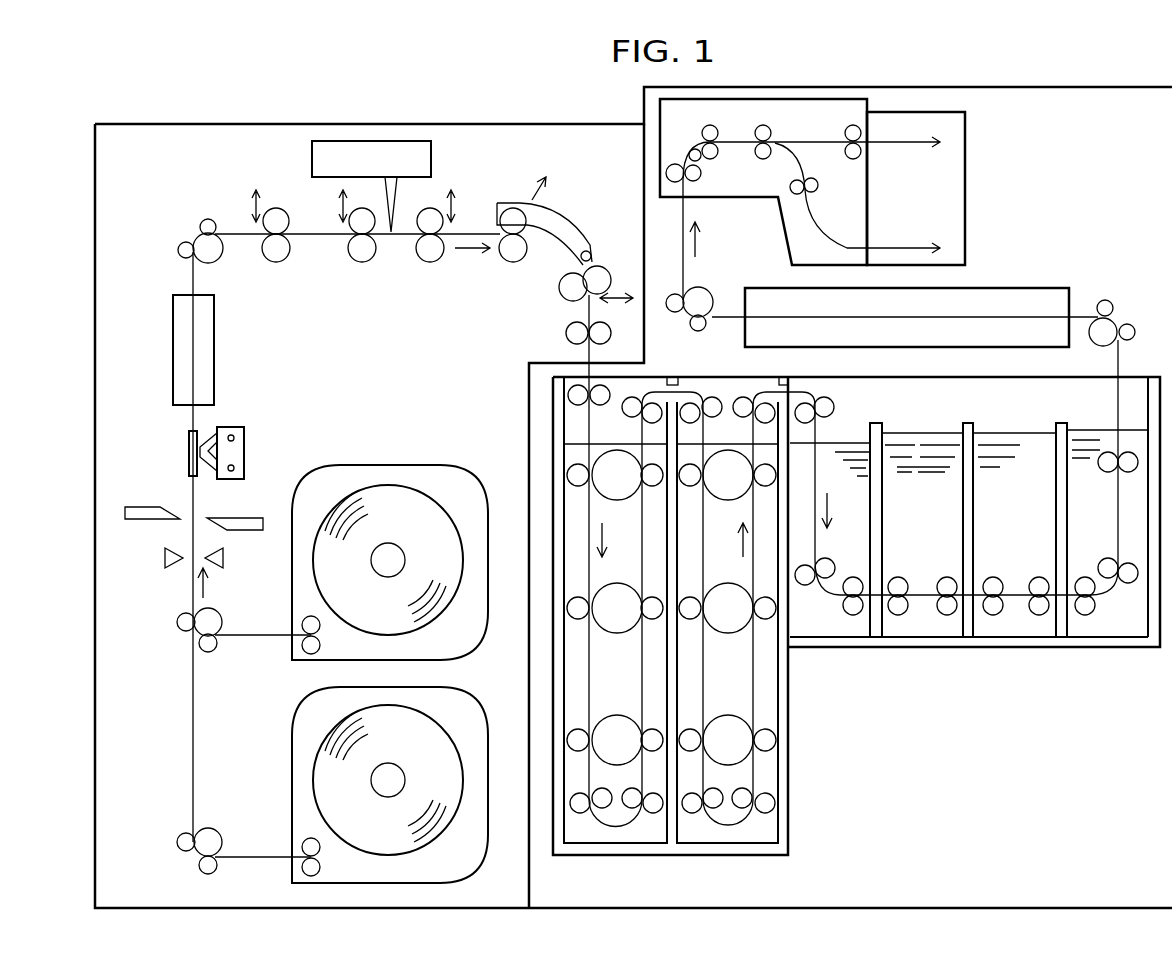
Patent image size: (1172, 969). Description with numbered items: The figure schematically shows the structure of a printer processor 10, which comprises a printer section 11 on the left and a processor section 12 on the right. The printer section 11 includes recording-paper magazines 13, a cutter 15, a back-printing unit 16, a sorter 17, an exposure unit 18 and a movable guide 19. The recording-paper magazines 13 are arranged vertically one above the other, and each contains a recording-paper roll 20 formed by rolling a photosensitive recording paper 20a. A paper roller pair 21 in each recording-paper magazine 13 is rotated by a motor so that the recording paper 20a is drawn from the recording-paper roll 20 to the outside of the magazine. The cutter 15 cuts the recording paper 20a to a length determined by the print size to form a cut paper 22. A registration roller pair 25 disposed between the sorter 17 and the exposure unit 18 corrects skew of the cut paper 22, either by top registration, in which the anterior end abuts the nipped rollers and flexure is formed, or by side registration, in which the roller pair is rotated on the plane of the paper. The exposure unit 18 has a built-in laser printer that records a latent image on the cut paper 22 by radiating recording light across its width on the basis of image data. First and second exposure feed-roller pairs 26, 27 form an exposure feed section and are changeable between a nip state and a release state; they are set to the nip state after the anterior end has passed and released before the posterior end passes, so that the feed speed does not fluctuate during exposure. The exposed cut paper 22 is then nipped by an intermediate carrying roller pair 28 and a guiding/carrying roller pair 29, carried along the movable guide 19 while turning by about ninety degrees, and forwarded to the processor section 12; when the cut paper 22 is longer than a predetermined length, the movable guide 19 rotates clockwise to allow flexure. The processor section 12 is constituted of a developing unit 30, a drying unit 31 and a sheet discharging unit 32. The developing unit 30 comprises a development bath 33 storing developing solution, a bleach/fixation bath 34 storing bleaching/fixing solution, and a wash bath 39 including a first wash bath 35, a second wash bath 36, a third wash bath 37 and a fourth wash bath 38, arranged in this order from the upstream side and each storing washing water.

The printer processor 10 is at (228, 113).
The printer section 11 is at (493, 120).
The processor section 12 is at (873, 84).
The recording-paper magazine 13 is at (447, 465).
The cutter 15 is at (127, 513).
The back-printing unit 16 is at (244, 443).
The sorter 17 is at (205, 373).
The exposure unit 18 is at (338, 155).
The movable guide 19 is at (562, 222).
The recording-paper roll 20 is at (388, 493).
The recording paper 20a is at (193, 587).
The paper roller pair 21 is at (305, 620).
The cut paper 22 is at (190, 345).
The registration roller pair 25 is at (277, 258).
The first exposure feed-roller pair 26 is at (362, 258).
The second exposure feed-roller pair 27 is at (430, 258).
The intermediate carrying roller pair 28 is at (515, 258).
The guiding/carrying roller pair 29 is at (570, 292).
The developing unit 30 is at (865, 757).
The drying unit 31 is at (1030, 293).
The sheet discharging unit 32 is at (788, 118).
The development bath 33 is at (632, 833).
The bleach/fixation bath 34 is at (780, 777).
The first wash bath 35 is at (850, 625).
The second wash bath 36 is at (943, 625).
The third wash bath 37 is at (1022, 625).
The fourth wash bath 38 is at (1098, 589).
The wash bath 39 is at (969, 594).